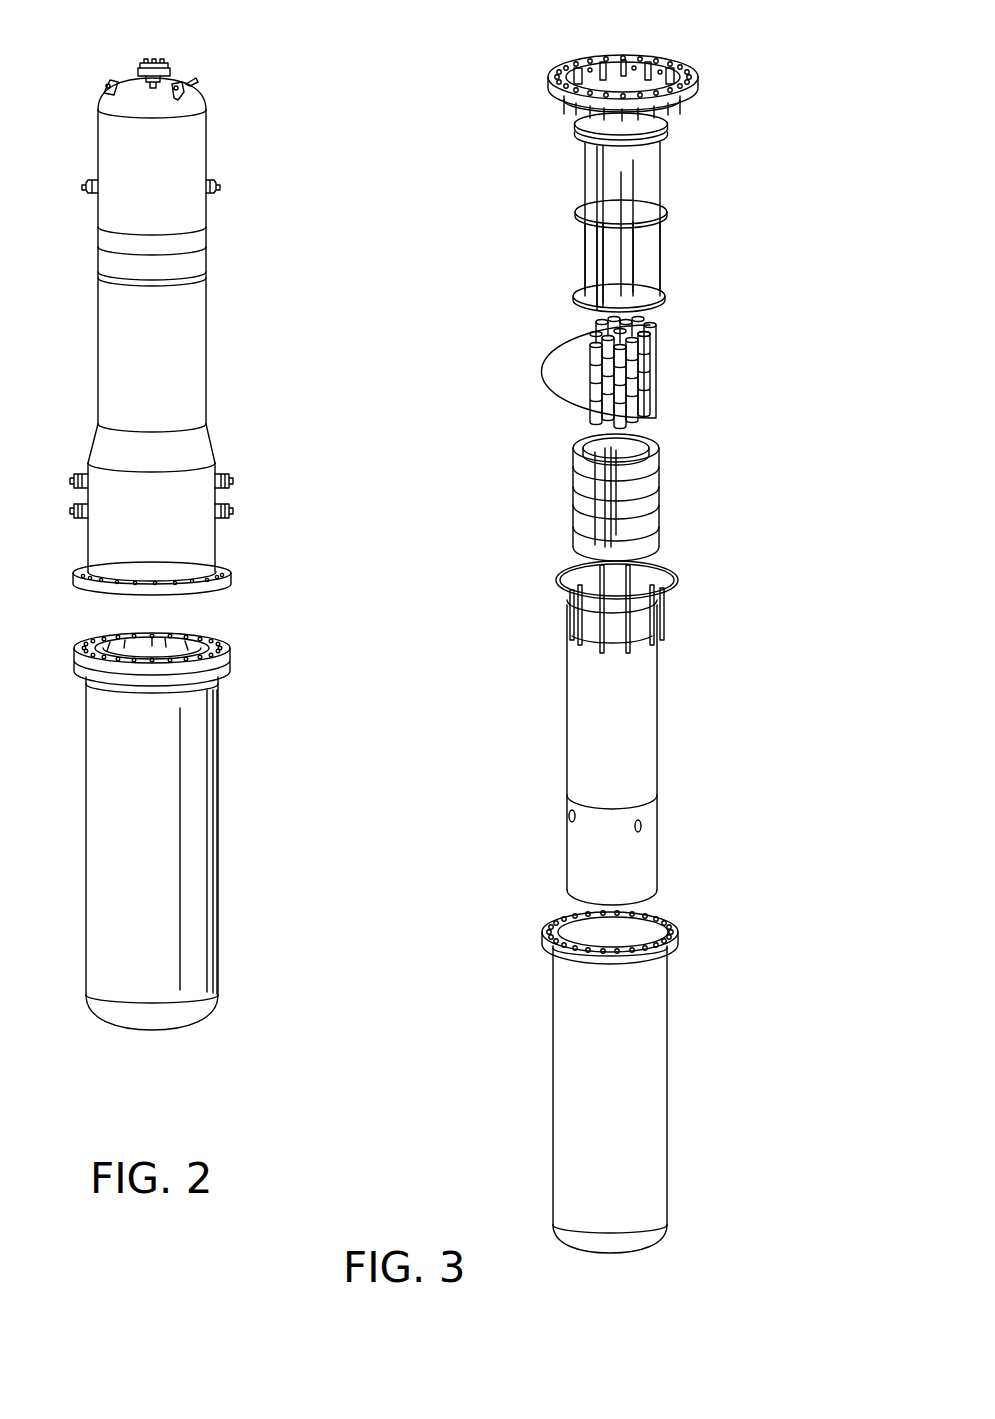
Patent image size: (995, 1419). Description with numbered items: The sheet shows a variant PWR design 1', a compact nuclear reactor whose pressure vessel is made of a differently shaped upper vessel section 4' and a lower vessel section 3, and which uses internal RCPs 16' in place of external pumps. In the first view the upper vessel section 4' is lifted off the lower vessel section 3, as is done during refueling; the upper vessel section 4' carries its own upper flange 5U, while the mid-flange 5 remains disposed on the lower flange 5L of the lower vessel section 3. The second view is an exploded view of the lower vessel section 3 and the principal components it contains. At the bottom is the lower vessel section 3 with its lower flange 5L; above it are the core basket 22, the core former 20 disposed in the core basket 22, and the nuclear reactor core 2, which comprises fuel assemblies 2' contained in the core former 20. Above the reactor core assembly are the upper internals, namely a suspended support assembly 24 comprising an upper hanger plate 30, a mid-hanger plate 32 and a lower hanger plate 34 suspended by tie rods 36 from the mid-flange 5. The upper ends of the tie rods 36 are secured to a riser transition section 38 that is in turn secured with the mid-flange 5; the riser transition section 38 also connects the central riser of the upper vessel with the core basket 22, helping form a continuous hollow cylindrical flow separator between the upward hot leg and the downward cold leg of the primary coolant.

In FIG. 2, the variant PWR design 1' is at (182, 544).
In FIG. 2, the upper vessel section 4' is at (210, 327).
In FIG. 2, the upper flange 5U is at (235, 570).
In FIG. 2, the mid-flange 5 is at (233, 655).
In FIG. 3, the mid-flange 5 is at (648, 58).
In FIG. 2, the lower flange 5L is at (235, 672).
In FIG. 3, the lower flange 5L is at (678, 929).
In FIG. 2, the lower vessel section 3 is at (288, 630).
In FIG. 3, the lower vessel section 3 is at (618, 1127).
In FIG. 3, the internal RCPs 16' is at (562, 132).
In FIG. 3, the riser transition section 38 is at (656, 125).
In FIG. 3, the upper hanger plate 30 is at (623, 116).
In FIG. 3, the tie rods 36 is at (617, 278).
In FIG. 3, the mid-hanger plate 32 is at (590, 211).
In FIG. 3, the lower hanger plate 34 is at (595, 302).
In FIG. 3, the suspended support assembly 24 is at (748, 72).
In FIG. 3, the fuel assemblies 2' is at (629, 353).
In FIG. 3, the nuclear reactor core 2 is at (582, 353).
In FIG. 3, the core former 20 is at (577, 470).
In FIG. 3, the core basket 22 is at (567, 733).